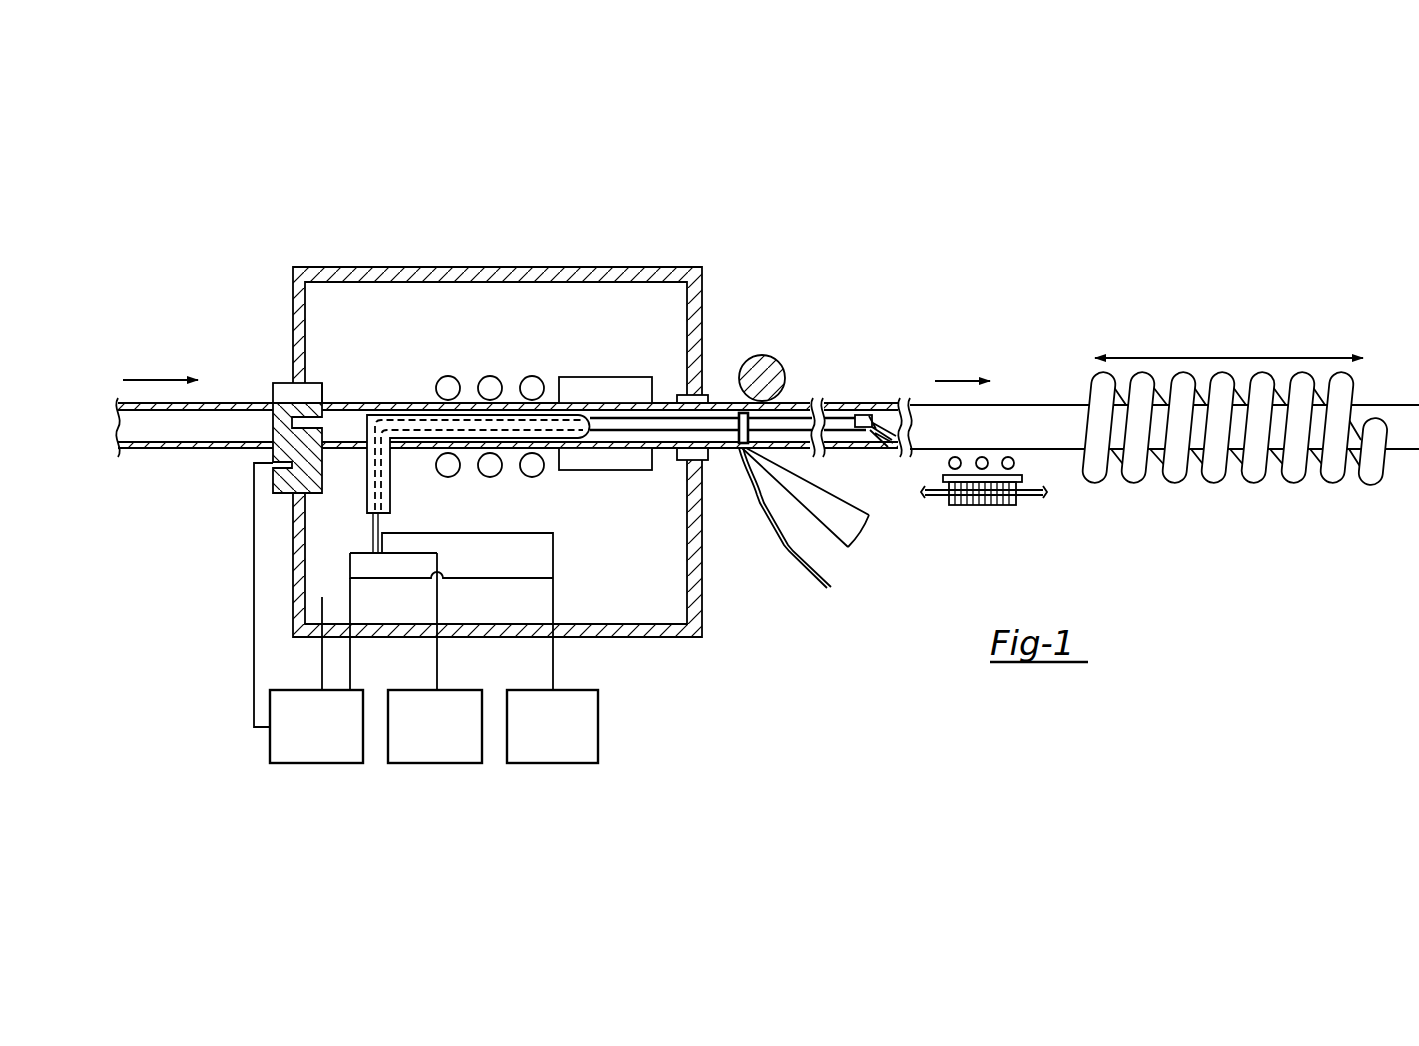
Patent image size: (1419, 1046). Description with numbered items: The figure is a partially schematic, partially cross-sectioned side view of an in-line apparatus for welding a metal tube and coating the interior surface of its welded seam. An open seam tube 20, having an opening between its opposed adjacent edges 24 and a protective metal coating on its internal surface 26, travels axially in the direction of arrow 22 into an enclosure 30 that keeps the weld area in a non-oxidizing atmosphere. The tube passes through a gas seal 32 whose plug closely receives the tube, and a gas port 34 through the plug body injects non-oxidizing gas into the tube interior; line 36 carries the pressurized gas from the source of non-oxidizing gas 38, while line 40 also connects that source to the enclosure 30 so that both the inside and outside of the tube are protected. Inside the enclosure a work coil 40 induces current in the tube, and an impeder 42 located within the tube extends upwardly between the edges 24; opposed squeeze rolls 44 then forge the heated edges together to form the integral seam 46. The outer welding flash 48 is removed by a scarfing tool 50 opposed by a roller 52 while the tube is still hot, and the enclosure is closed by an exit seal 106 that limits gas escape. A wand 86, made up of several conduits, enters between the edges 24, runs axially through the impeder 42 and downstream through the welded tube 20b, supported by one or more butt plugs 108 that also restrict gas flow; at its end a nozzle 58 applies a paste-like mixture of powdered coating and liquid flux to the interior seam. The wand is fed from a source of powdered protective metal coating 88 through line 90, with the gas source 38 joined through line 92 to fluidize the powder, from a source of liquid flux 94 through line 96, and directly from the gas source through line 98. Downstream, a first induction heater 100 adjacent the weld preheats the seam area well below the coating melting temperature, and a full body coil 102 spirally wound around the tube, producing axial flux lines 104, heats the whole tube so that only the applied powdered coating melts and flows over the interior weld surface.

The open seam tube 20 is at (222, 404).
The welded tube 20b is at (797, 400).
The arrow 22 is at (163, 378).
The opposed adjacent edges 24 is at (177, 448).
The internal surface 26 is at (250, 428).
The enclosure 30 is at (565, 269).
The gas seal 32 is at (310, 392).
The gas port 34 is at (322, 397).
The line 36 is at (254, 587).
The source of non-oxidizing gas 38 is at (304, 743).
The work coil 40 is at (470, 371).
The impeder 42 is at (508, 432).
The squeeze roll 44 is at (583, 392).
The integral seam 46 is at (604, 450).
The outer welding flash 48 is at (785, 550).
The scarfing tool 50 is at (845, 525).
The roller 52 is at (766, 356).
The nozzle 58 is at (863, 415).
The wand 86 is at (666, 410).
The source of protective metal coating 88 is at (540, 743).
The line 90 is at (553, 553).
The line 92 is at (482, 578).
The source of liquid flux 94 is at (424, 743).
The line 96 is at (378, 548).
The line 98 is at (372, 542).
The first induction heater 100 is at (984, 499).
The full body coil 102 is at (1180, 458).
The flux lines 104 is at (1268, 355).
The exit seal 106 is at (710, 460).
The butt plug 108 is at (720, 415).